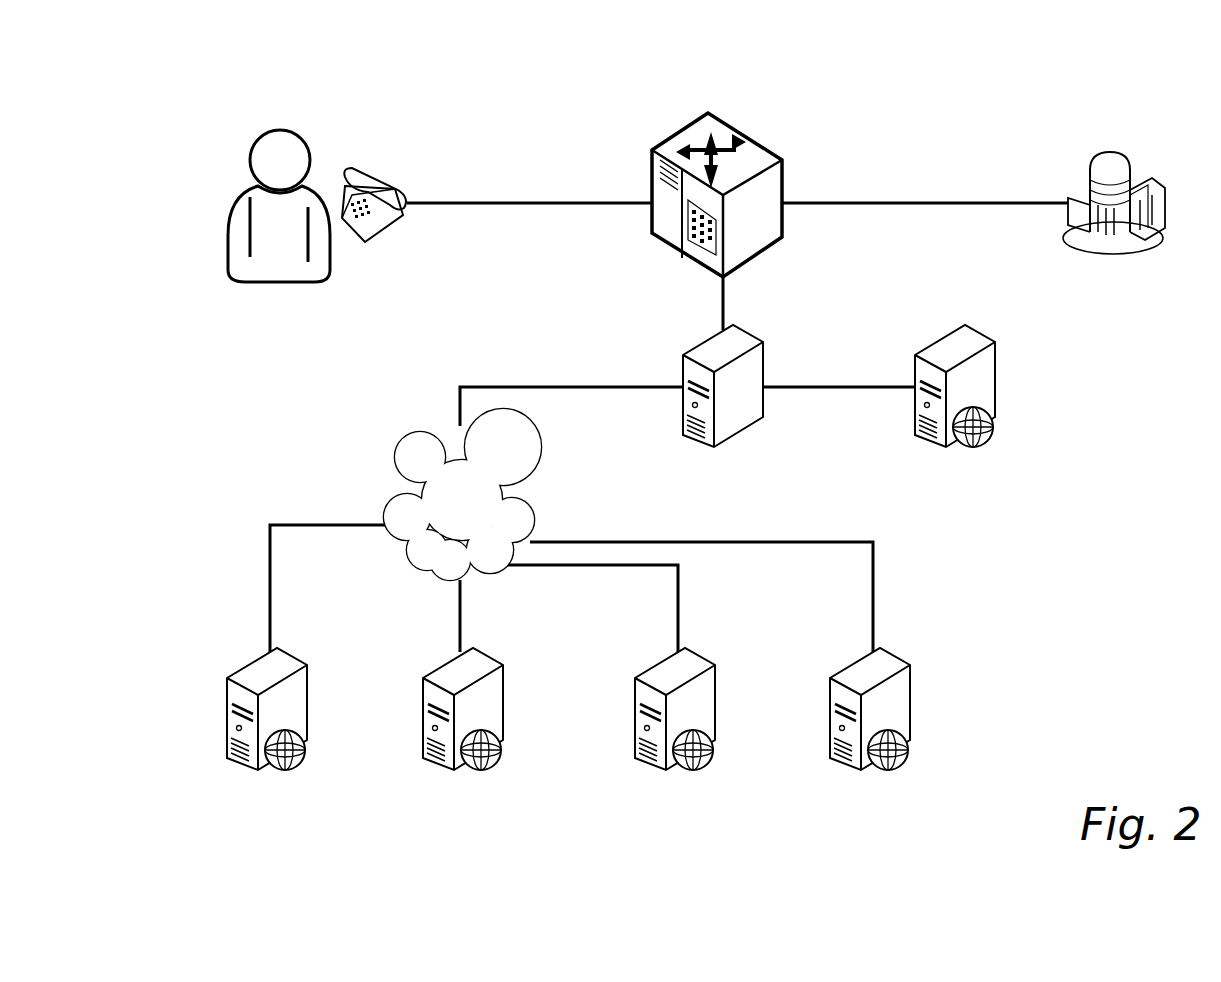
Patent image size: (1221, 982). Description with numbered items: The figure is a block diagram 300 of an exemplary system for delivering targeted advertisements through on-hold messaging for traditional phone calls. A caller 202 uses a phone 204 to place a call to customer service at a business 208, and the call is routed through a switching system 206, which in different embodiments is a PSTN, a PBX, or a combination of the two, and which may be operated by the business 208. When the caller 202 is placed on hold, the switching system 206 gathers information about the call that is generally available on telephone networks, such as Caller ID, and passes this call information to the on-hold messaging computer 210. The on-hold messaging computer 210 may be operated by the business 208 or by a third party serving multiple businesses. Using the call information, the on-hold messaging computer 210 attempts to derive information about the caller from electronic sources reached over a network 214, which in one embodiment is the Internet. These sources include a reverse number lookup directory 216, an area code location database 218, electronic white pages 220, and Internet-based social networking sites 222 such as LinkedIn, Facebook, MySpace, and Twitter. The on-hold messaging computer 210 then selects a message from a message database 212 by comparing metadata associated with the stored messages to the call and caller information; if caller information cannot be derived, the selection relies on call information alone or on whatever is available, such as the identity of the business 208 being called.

The system 300 is at (1043, 63).
The caller 202 is at (270, 162).
The phone 204 is at (367, 170).
The switching system 206 is at (663, 148).
The business 208 is at (1090, 175).
The on-hold messaging computer 210 is at (733, 342).
The message database 212 is at (970, 340).
The network 214 is at (477, 502).
The reverse number lookup directory 216 is at (258, 663).
The area code location database 218 is at (455, 663).
The electronic white pages 220 is at (665, 663).
The Internet-based social networking sites 222 is at (860, 663).